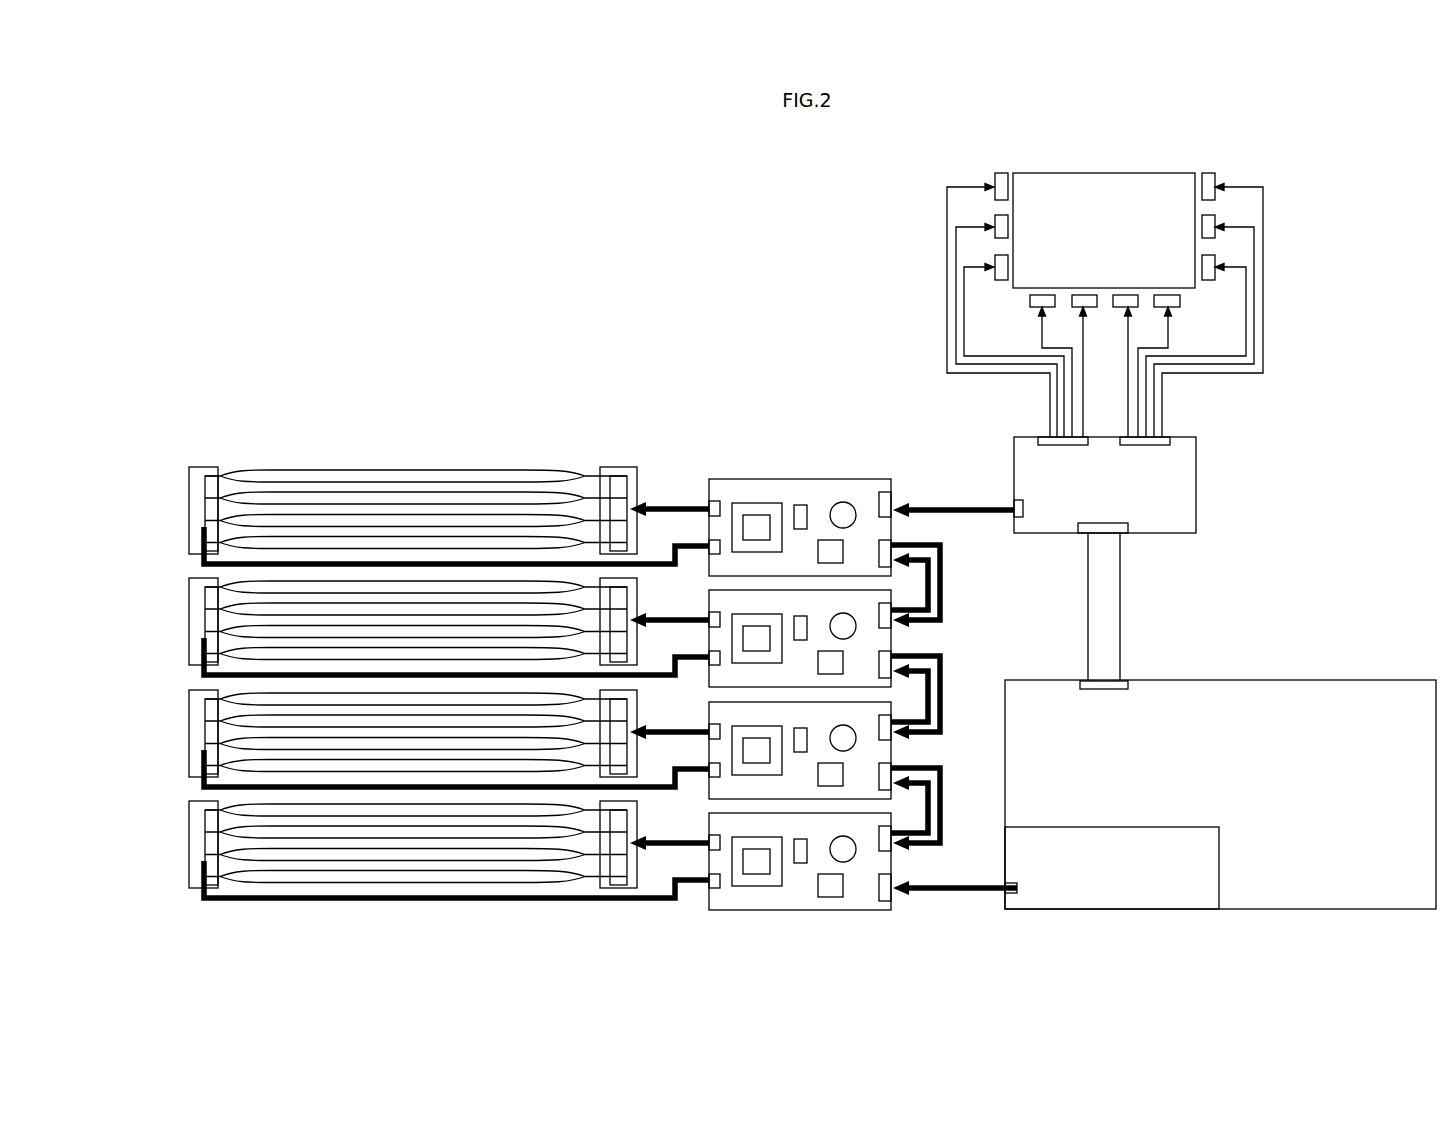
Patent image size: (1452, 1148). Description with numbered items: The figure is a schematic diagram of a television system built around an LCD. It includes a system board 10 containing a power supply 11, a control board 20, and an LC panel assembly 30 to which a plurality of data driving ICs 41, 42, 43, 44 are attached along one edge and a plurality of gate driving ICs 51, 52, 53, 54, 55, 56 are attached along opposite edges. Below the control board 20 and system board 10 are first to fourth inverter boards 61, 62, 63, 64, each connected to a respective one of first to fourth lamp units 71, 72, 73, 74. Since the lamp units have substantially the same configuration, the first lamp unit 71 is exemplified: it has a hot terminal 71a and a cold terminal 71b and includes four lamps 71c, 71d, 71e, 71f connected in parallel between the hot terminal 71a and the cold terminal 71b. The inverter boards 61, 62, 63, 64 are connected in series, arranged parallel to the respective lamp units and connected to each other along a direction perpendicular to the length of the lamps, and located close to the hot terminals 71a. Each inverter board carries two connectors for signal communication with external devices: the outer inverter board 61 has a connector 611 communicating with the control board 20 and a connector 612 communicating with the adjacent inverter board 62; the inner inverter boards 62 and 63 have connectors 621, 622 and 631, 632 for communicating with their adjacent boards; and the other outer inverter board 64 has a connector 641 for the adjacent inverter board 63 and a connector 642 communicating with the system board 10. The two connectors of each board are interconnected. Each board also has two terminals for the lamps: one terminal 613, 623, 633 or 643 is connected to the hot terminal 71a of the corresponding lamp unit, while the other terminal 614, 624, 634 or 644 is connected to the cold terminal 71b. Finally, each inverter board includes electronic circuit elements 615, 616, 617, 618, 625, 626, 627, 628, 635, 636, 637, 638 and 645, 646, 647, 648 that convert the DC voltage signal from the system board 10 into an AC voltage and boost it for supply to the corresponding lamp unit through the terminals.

The system board 10 is at (1225, 679).
The power supply 11 is at (1221, 872).
The control board 20 is at (1198, 485).
The LC panel assembly 30 is at (1103, 173).
The data driving IC 41 is at (1032, 307).
The data driving IC 42 is at (1073, 307).
The data driving IC 43 is at (1136, 307).
The data driving IC 44 is at (1178, 307).
The gate driving IC 51 is at (997, 256).
The gate driving IC 52 is at (997, 216).
The gate driving IC 53 is at (997, 173).
The gate driving IC 54 is at (1213, 256).
The gate driving IC 55 is at (1213, 216).
The gate driving IC 56 is at (1213, 173).
The first inverter board 61 is at (895, 483).
The connector 611 is at (893, 500).
The connector 612 is at (893, 538).
The terminal 613 is at (708, 502).
The terminal 614 is at (708, 542).
The electronic circuit element 615 is at (745, 504).
The electronic circuit element 616 is at (807, 503).
The electronic circuit element 617 is at (850, 527).
The electronic circuit element 618 is at (817, 555).
The second inverter board 62 is at (893, 638).
The connector 621 is at (893, 602).
The connector 622 is at (888, 652).
The terminal 623 is at (708, 613).
The terminal 624 is at (708, 653).
The electronic circuit element 625 is at (745, 615).
The electronic circuit element 626 is at (807, 614).
The electronic circuit element 627 is at (850, 638).
The electronic circuit element 628 is at (817, 666).
The third inverter board 63 is at (893, 747).
The connector 631 is at (893, 714).
The connector 632 is at (888, 764).
The terminal 633 is at (708, 725).
The terminal 634 is at (708, 765).
The electronic circuit element 635 is at (745, 727).
The electronic circuit element 636 is at (807, 726).
The electronic circuit element 637 is at (850, 750).
The electronic circuit element 638 is at (817, 778).
The fourth inverter board 64 is at (892, 900).
The connector 641 is at (893, 825).
The connector 642 is at (893, 872).
The terminal 643 is at (708, 836).
The terminal 644 is at (708, 876).
The electronic circuit element 645 is at (745, 838).
The electronic circuit element 646 is at (807, 837).
The electronic circuit element 647 is at (850, 861).
The electronic circuit element 648 is at (817, 889).
The first lamp unit 71 is at (379, 488).
The hot terminal 71a is at (617, 467).
The cold terminal 71b is at (205, 467).
The lamp 71c is at (377, 470).
The lamp 71d is at (420, 492).
The lamp 71e is at (460, 514).
The lamp 71f is at (502, 536).
The second lamp unit 72 is at (174, 620).
The third lamp unit 73 is at (174, 732).
The fourth lamp unit 74 is at (174, 843).